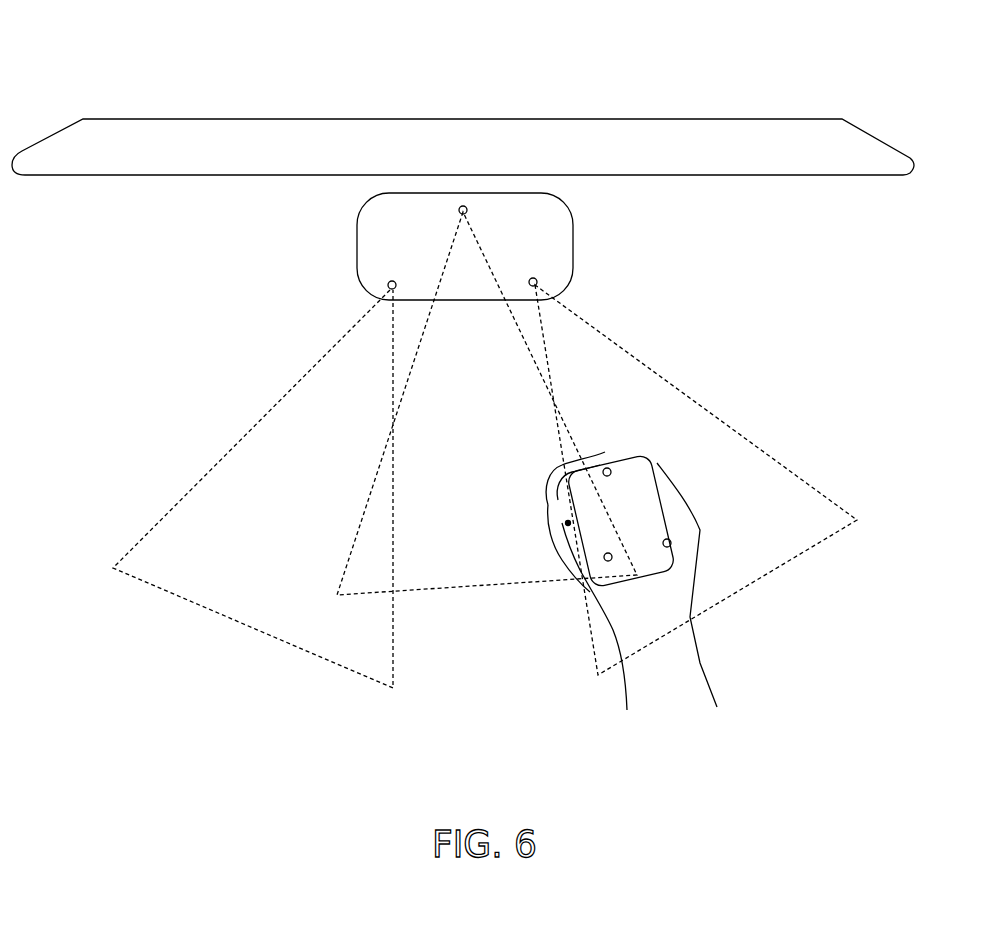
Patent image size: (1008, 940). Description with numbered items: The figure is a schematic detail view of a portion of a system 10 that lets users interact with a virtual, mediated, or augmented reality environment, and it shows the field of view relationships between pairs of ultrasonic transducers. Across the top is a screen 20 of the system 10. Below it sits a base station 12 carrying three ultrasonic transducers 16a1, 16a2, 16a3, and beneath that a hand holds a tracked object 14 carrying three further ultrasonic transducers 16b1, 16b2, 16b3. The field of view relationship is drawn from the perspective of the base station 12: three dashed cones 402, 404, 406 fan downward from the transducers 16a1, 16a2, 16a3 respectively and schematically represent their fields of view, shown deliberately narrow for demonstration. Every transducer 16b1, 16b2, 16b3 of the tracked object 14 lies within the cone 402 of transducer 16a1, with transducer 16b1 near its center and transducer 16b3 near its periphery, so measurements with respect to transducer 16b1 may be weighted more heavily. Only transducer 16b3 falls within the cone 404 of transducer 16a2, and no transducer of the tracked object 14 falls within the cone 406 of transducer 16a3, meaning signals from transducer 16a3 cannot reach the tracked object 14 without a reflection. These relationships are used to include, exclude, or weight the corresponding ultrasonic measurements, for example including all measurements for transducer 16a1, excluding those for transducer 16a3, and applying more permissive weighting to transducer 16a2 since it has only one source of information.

The system 10 is at (137, 47).
The screen 20 is at (463, 147).
The base station 12 is at (352, 213).
The ultrasonic transducer 16a1 is at (541, 278).
The ultrasonic transducer 16a2 is at (471, 215).
The ultrasonic transducer 16a3 is at (384, 276).
The tracked object 14 is at (666, 458).
The ultrasonic transducer 16b1 is at (676, 548).
The ultrasonic transducer 16b2 is at (600, 466).
The ultrasonic transducer 16b3 is at (605, 565).
The cone 402 is at (687, 391).
The cone 404 is at (500, 587).
The cone 406 is at (258, 423).